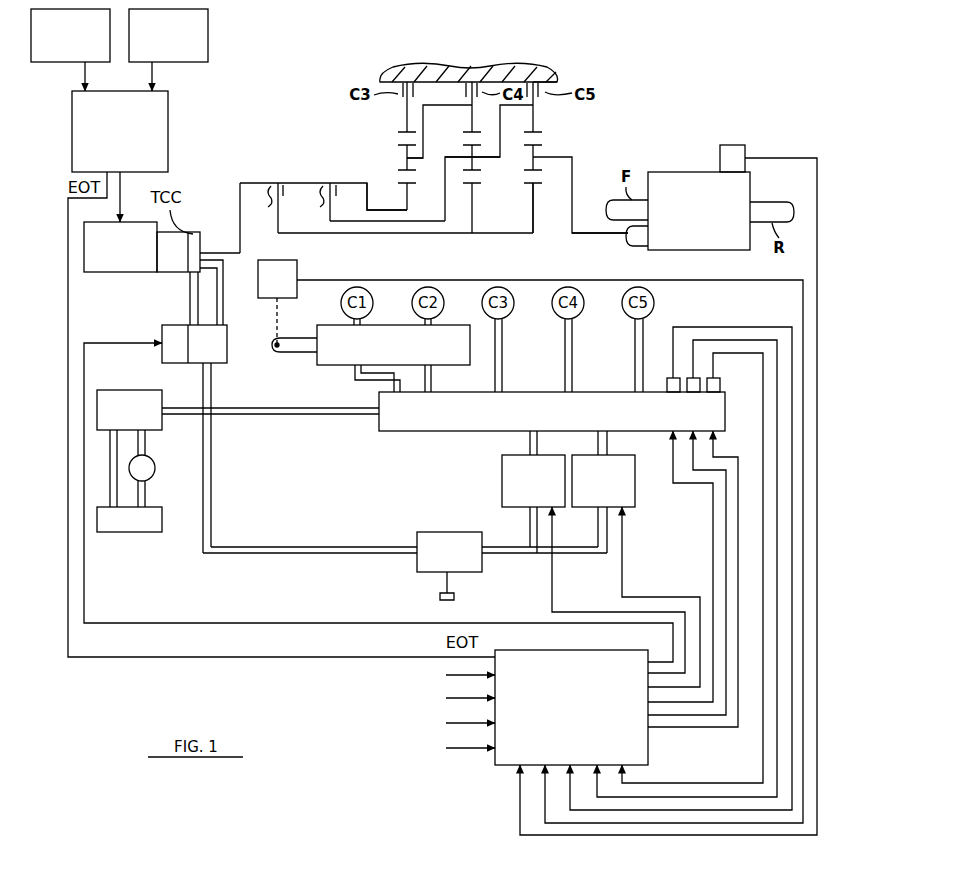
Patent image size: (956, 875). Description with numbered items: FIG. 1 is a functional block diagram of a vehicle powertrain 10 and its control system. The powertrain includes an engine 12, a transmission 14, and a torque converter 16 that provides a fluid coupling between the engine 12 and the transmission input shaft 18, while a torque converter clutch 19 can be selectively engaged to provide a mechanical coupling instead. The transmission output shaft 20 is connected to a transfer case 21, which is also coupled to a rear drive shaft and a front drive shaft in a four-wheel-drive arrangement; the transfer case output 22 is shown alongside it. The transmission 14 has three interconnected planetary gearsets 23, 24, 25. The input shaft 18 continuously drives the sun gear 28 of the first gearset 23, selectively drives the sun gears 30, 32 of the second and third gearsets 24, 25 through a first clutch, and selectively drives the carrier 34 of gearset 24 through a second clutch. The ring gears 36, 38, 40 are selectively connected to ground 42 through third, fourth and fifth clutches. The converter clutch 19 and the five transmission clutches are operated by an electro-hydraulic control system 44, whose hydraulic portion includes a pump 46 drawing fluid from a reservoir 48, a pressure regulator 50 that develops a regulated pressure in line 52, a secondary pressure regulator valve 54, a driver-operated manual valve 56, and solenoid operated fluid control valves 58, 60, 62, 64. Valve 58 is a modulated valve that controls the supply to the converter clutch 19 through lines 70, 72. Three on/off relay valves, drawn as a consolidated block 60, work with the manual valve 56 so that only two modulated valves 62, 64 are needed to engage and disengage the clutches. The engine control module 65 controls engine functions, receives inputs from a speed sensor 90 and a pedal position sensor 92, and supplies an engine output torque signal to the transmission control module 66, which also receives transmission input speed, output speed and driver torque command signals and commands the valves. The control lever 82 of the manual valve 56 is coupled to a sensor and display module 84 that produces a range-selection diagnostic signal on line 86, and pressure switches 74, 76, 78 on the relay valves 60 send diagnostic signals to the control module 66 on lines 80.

The vehicle powertrain 10 is at (258, 128).
The engine 12 is at (108, 274).
The transmission 14 is at (370, 152).
The torque converter 16 is at (166, 274).
The transmission input shaft 18 is at (240, 197).
The torque converter clutch 19 is at (201, 241).
The transmission output shaft 20 is at (600, 234).
The transfer case 21 is at (692, 172).
The transfer case output 22 is at (745, 150).
The planetary gearset 23 is at (419, 166).
The planetary gearset 24 is at (483, 165).
The planetary gearset 25 is at (548, 147).
The sun gear 28 is at (405, 203).
The sun gear 30 is at (473, 233).
The sun gear 32 is at (533, 233).
The carrier 34 is at (452, 156).
The ring gear 36 is at (403, 102).
The ring gear 38 is at (466, 92).
The ring gear 40 is at (540, 97).
The ground 42 is at (556, 70).
The electro-hydraulic control system 44 is at (830, 320).
The pump 46 is at (155, 464).
The reservoir 48 is at (162, 521).
The pressure regulator 50 is at (130, 390).
The line 52 is at (288, 415).
The secondary pressure regulator valve 54 is at (415, 566).
The manual valve 56 is at (341, 366).
The solenoid operated fluid control valve 58 is at (227, 355).
The relay valves 60 is at (397, 433).
The modulated valve 62 is at (500, 498).
The modulated valve 64 is at (636, 497).
The engine control module 65 is at (168, 132).
The transmission control module 66 is at (500, 765).
The line 70 is at (188, 316).
The line 72 is at (224, 303).
The pressure switch 74 is at (671, 378).
The pressure switch 76 is at (700, 389).
The pressure switch 78 is at (721, 385).
The lines 80 is at (681, 553).
The control lever 82 is at (299, 353).
The sensor and display module 84 is at (297, 266).
The line 86 is at (692, 282).
The speed sensor 90 is at (47, 63).
The pedal position sensor 92 is at (208, 31).